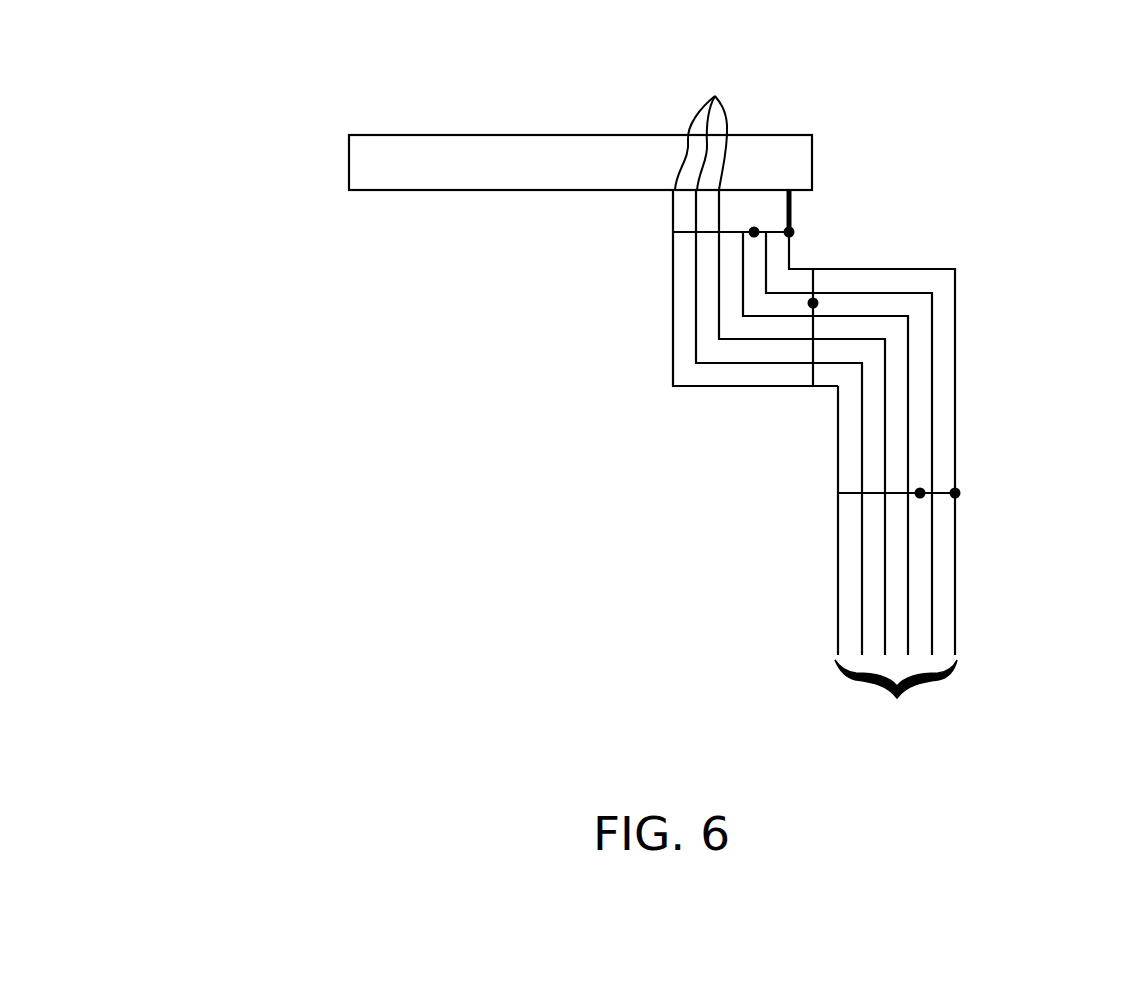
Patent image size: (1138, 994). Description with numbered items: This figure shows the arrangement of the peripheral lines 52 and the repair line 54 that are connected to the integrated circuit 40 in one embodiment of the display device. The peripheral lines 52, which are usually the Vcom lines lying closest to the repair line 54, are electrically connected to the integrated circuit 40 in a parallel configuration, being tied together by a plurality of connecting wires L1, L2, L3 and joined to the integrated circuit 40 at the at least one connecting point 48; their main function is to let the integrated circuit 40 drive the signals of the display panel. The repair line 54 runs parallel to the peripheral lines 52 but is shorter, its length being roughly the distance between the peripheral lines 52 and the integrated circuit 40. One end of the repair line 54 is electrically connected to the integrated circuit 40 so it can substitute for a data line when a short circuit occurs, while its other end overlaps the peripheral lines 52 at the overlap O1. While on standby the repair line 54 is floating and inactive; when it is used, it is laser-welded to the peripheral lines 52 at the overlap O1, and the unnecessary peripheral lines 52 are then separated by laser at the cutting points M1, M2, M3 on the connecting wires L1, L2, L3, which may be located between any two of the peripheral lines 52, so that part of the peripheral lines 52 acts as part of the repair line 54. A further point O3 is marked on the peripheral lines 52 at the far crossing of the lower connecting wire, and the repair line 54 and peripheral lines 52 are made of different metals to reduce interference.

The integrated circuit 40 is at (365, 157).
The connecting point 48 is at (710, 110).
The peripheral lines 52 is at (896, 710).
The repair line 54 is at (790, 212).
The connecting wire L1 is at (673, 236).
The connecting wire L2 is at (813, 385).
The connecting wire L3 is at (842, 496).
The cutting point M1 is at (753, 233).
The cutting point M2 is at (813, 303).
The cutting point M3 is at (920, 493).
The overlap O1 is at (789, 232).
The third node O3 is at (955, 493).